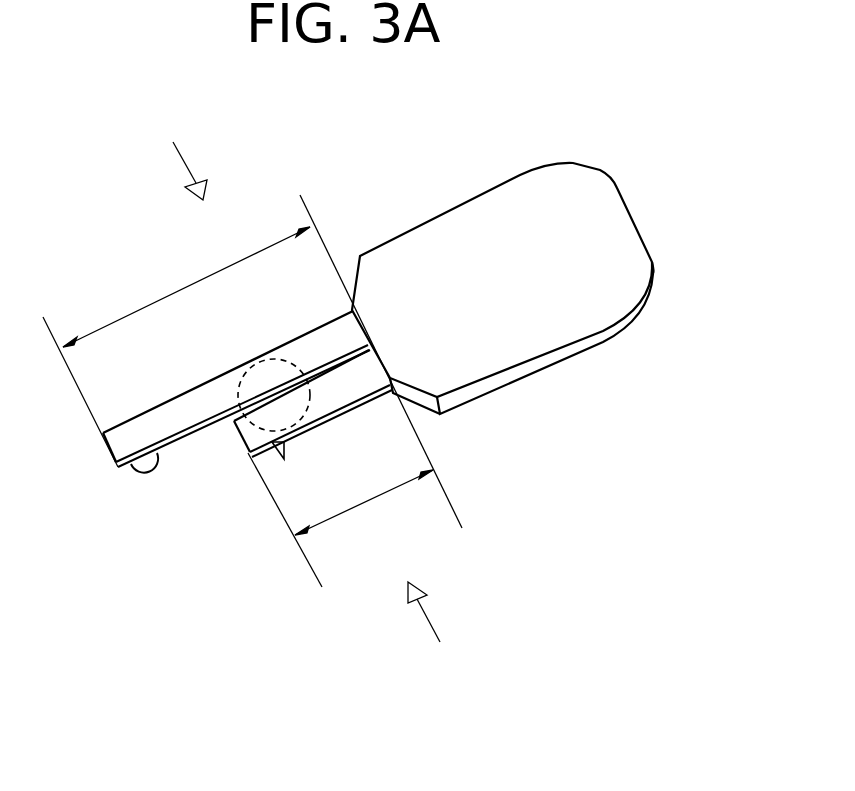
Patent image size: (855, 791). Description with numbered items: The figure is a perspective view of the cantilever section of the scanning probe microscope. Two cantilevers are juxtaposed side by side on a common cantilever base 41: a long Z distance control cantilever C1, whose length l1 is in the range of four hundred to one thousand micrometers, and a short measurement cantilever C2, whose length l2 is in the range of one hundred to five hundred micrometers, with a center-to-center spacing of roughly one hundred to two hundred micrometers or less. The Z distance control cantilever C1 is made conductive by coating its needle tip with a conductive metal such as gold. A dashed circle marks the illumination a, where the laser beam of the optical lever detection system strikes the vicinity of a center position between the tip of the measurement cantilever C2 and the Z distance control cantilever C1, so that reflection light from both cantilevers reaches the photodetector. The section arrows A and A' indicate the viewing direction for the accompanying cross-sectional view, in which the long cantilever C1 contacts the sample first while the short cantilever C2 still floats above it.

The cantilever base 41 is at (538, 308).
The Z distance control cantilever C1 is at (125, 438).
The measurement cantilever C2 is at (251, 455).
The illumination a is at (240, 413).
The length of the Z distance control cantilever l1 is at (162, 297).
The length of the measurement cantilever l2 is at (363, 507).
The section arrow A is at (435, 633).
The section arrow A' is at (200, 165).